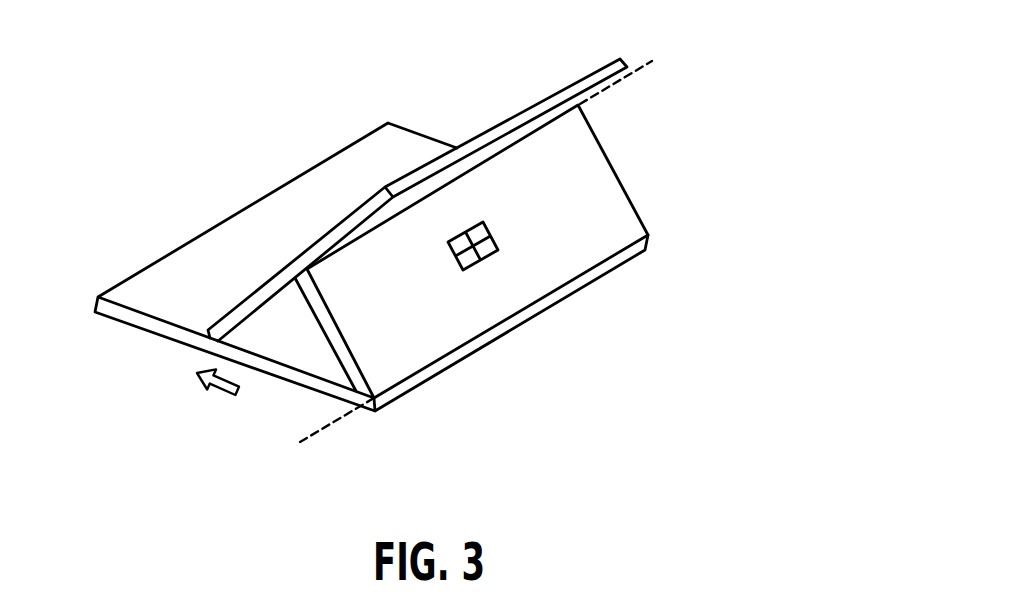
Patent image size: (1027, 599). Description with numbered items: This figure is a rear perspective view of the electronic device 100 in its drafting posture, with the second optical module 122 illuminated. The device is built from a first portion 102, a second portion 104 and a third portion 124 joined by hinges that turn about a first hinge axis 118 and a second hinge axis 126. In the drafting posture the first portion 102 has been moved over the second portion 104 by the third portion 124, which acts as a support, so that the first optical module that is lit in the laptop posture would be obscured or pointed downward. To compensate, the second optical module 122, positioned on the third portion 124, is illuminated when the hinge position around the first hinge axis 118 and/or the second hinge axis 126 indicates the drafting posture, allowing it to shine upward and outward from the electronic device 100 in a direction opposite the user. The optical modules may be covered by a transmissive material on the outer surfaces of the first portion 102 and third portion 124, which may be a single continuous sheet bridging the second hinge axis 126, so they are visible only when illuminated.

The electronic device 100 is at (479, 232).
The first portion 102 is at (352, 210).
The second portion 104 is at (146, 268).
The first hinge axis 118 is at (330, 421).
The second optical module 122 is at (482, 258).
The third portion 124 is at (607, 192).
The second hinge axis 126 is at (637, 73).